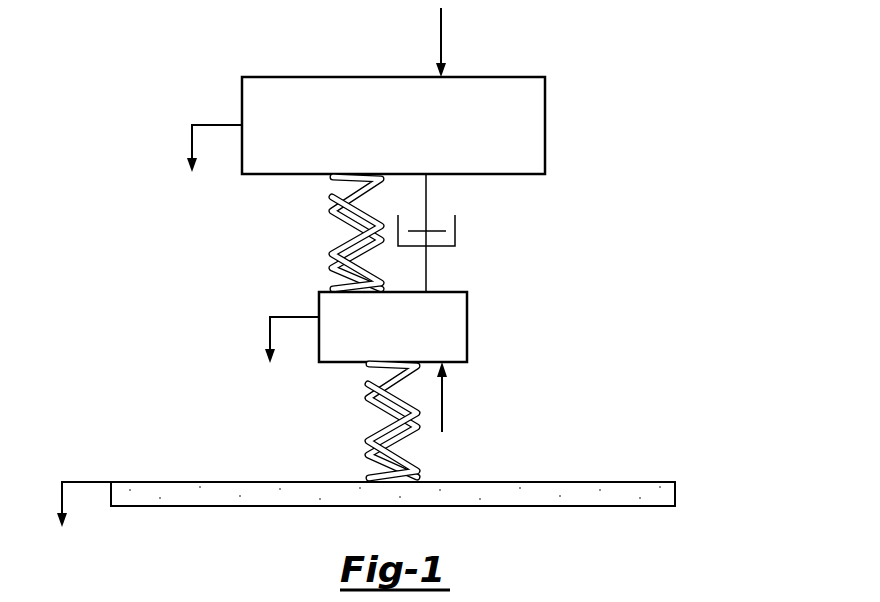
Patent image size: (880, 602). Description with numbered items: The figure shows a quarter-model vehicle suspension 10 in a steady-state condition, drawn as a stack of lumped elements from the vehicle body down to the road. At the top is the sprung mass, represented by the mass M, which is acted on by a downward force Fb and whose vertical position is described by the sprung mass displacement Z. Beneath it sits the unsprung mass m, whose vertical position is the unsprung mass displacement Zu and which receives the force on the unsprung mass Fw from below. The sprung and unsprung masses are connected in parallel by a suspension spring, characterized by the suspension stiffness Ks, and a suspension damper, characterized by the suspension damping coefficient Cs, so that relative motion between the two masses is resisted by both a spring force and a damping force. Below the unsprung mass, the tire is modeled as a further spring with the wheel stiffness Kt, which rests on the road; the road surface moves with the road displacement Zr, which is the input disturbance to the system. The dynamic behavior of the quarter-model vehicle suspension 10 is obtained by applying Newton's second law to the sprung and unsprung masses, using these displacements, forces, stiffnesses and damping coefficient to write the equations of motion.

The quarter-model vehicle suspension 10 is at (600, 68).
The mass M is at (393, 125).
The unsprung mass m is at (393, 327).
The suspension stiffness Ks is at (335, 233).
The suspension damping coefficient Cs is at (446, 233).
The wheel stiffness Kt is at (371, 421).
The body force Fb is at (459, 42).
The force on the unsprung mass Fw is at (459, 398).
The sprung mass displacement Z is at (202, 148).
The unsprung mass displacement Zu is at (275, 335).
The road displacement Zr is at (66, 501).